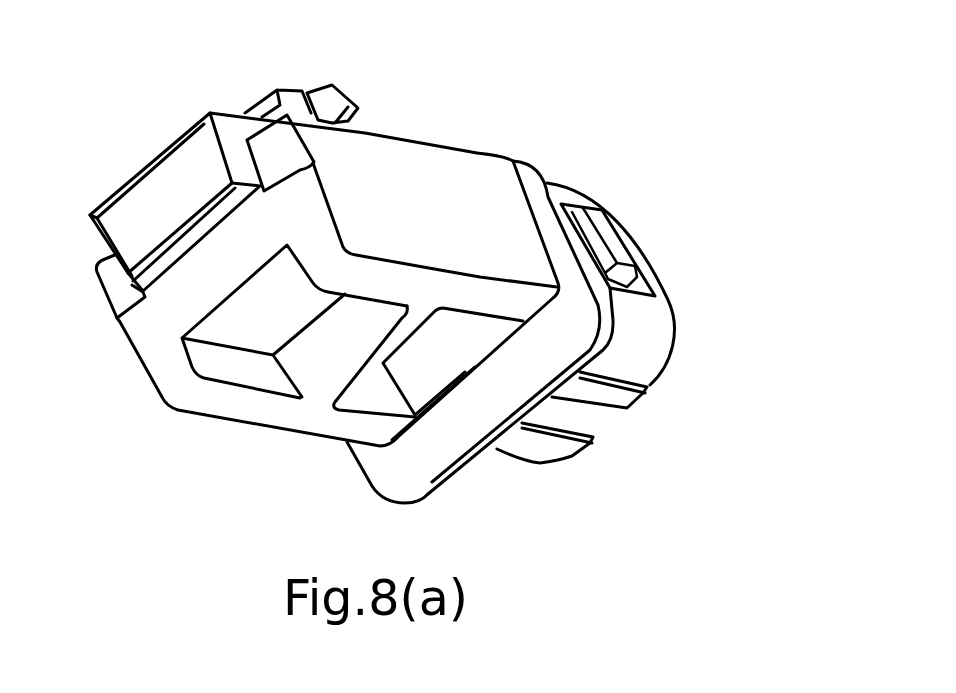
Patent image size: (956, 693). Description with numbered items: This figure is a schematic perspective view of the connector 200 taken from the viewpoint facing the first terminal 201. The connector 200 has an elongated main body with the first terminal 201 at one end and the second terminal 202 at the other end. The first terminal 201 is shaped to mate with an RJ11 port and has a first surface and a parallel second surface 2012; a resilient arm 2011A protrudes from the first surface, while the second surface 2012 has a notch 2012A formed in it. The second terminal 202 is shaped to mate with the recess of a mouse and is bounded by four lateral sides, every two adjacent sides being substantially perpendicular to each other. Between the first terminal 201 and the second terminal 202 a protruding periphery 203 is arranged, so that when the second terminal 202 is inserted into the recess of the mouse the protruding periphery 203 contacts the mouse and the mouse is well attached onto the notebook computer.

The connector 200 is at (527, 110).
The first terminal 201 is at (143, 342).
The resilient arm 2011A is at (332, 100).
The second surface 2012 is at (355, 367).
The notch 2012A is at (257, 333).
The second terminal 202 is at (613, 417).
The protruding periphery 203 is at (445, 452).